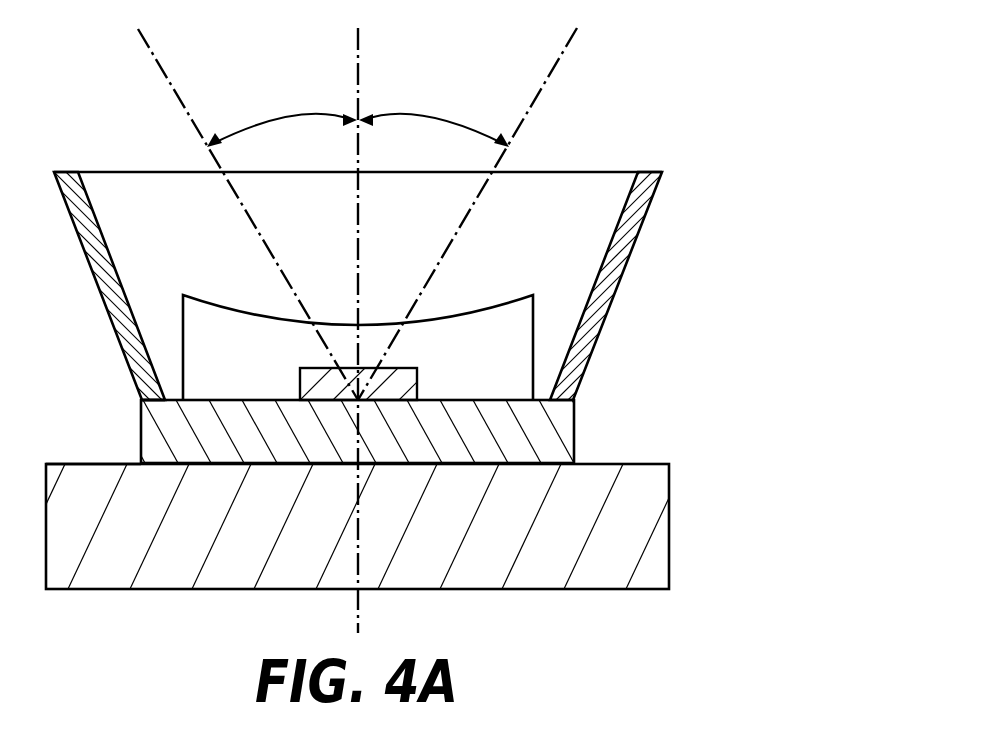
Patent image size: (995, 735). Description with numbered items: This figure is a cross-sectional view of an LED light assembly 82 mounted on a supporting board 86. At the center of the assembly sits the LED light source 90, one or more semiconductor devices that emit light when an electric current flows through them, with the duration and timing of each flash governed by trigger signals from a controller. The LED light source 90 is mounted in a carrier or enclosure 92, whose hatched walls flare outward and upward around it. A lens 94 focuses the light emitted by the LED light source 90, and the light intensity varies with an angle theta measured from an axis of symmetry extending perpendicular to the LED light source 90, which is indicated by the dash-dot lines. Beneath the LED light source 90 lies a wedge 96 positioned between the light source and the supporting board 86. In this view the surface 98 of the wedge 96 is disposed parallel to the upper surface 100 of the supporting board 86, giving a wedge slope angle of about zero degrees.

The LED light assembly 82 is at (105, 102).
The supporting board 86 is at (652, 535).
The LED light source 90 is at (408, 382).
The carrier or enclosure 92 is at (630, 231).
The lens 94 is at (523, 349).
The wedge 96 is at (562, 435).
The inclined surface 98 is at (177, 398).
The upper surface 100 is at (105, 463).